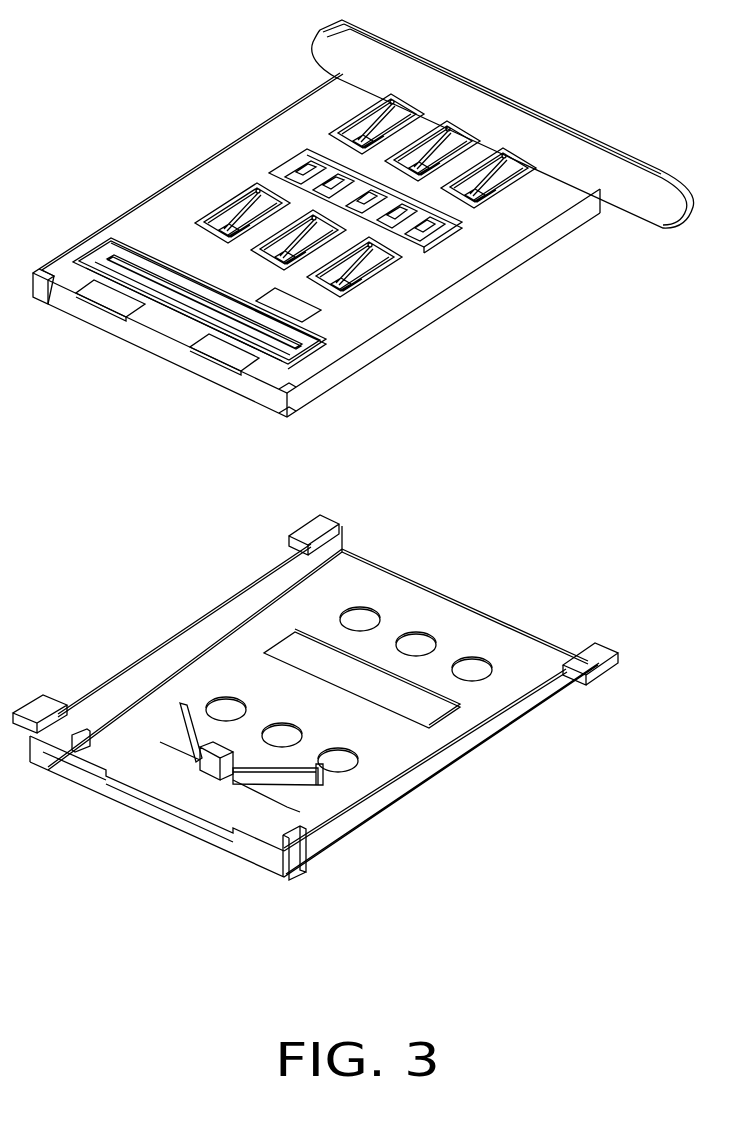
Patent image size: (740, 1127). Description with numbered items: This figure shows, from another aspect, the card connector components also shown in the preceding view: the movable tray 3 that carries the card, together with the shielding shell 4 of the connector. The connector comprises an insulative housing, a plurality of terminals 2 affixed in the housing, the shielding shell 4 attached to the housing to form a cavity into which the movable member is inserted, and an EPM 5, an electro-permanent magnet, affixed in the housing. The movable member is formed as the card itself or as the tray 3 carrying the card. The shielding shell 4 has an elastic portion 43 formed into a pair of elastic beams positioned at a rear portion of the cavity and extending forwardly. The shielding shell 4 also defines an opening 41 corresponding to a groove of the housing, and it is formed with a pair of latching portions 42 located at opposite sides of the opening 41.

The terminals 2 is at (566, 132).
The tray 3 is at (497, 178).
The shielding shell 4 is at (322, 739).
The EPM (Electro-Permanent Magnet) 5 is at (262, 368).
The opening 41 is at (180, 783).
The latching portions 42 is at (273, 847).
The elastic portion 43 is at (300, 775).